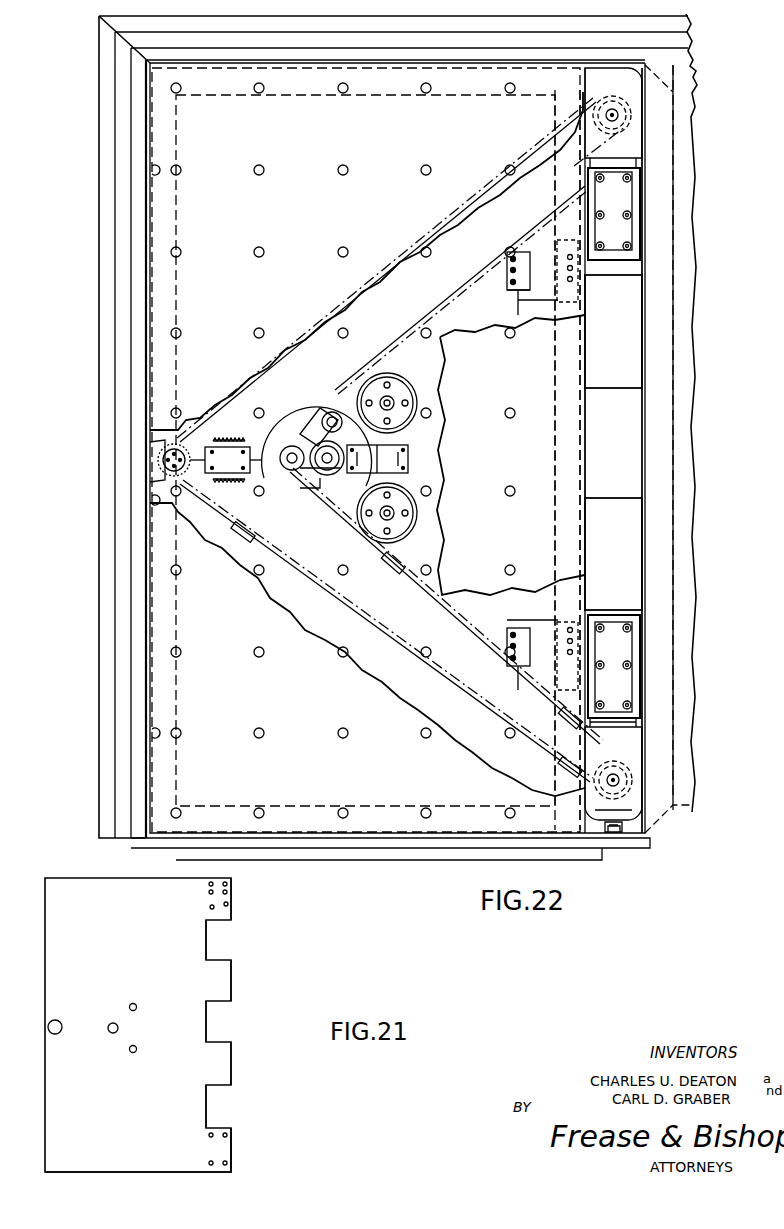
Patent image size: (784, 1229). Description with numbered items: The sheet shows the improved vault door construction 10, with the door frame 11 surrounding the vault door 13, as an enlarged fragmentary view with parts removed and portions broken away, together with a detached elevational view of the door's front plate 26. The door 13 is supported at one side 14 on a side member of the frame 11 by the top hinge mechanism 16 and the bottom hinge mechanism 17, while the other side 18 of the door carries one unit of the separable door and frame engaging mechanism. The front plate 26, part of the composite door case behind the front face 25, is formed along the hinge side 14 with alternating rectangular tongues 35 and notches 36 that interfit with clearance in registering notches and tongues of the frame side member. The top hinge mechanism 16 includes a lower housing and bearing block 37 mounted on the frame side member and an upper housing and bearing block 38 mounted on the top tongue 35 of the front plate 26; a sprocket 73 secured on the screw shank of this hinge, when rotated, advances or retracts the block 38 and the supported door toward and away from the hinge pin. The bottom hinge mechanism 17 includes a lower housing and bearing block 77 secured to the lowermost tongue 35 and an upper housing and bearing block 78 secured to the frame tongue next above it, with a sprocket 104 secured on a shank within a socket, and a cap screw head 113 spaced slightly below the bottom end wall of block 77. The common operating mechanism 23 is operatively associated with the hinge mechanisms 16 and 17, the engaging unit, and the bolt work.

In FIG. 22, the vault door construction 10 is at (90, 556).
In FIG. 22, the door frame 11 is at (100, 298).
In FIG. 22, the vault door 13 is at (394, 812).
In FIG. 22, the side of the door 14 is at (587, 481).
In FIG. 21, the side of the door 14 is at (232, 1160).
In FIG. 22, the top hinge mechanism 16 is at (628, 143).
In FIG. 22, the bottom hinge mechanism 17 is at (634, 737).
In FIG. 22, the other side of the door 18 is at (160, 488).
In FIG. 22, the common operating mechanism 23 is at (317, 388).
In FIG. 22, the front face of the door 25 is at (222, 152).
In FIG. 22, the front plate 26 is at (328, 628).
In FIG. 21, the front plate 26 is at (138, 1025).
In FIG. 22, the tongues 35 is at (632, 334).
In FIG. 21, the tongues 35 is at (230, 899).
In FIG. 22, the notches 36 is at (600, 389).
In FIG. 21, the notches 36 is at (206, 941).
In FIG. 22, the lower housing and bearing block 37 is at (618, 206).
In FIG. 22, the upper housing and bearing block 38 is at (632, 92).
In FIG. 22, the sprocket 73 is at (622, 118).
In FIG. 22, the lower housing and bearing block 77 is at (638, 787).
In FIG. 22, the upper housing and bearing block 78 is at (625, 646).
In FIG. 22, the sprocket 104 is at (588, 752).
In FIG. 22, the head 113 is at (613, 832).